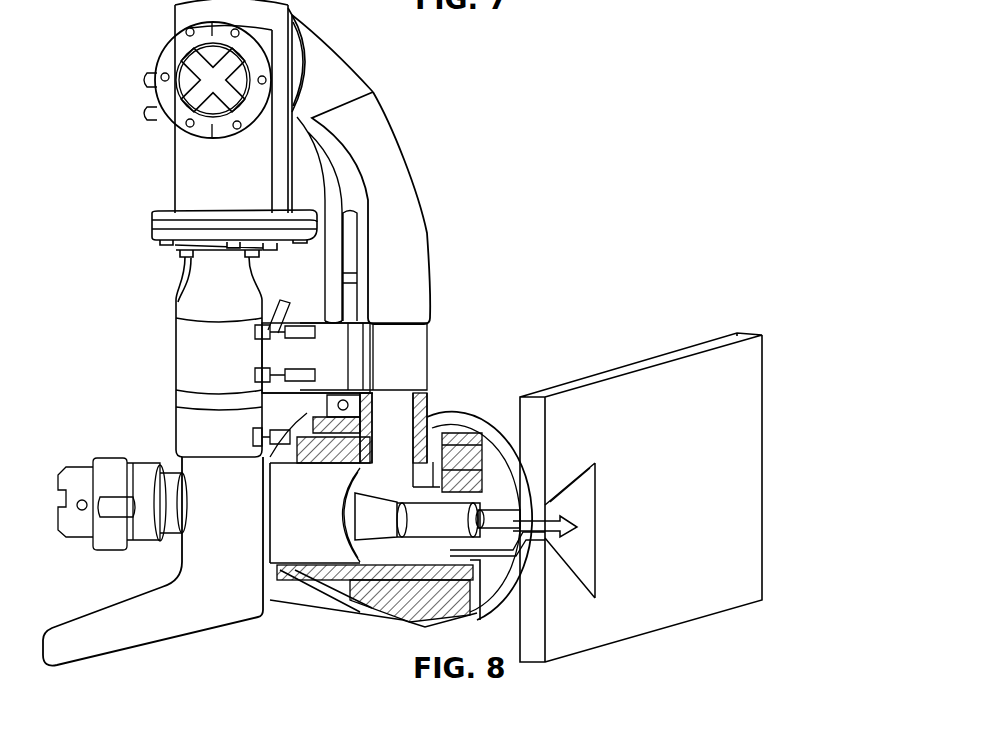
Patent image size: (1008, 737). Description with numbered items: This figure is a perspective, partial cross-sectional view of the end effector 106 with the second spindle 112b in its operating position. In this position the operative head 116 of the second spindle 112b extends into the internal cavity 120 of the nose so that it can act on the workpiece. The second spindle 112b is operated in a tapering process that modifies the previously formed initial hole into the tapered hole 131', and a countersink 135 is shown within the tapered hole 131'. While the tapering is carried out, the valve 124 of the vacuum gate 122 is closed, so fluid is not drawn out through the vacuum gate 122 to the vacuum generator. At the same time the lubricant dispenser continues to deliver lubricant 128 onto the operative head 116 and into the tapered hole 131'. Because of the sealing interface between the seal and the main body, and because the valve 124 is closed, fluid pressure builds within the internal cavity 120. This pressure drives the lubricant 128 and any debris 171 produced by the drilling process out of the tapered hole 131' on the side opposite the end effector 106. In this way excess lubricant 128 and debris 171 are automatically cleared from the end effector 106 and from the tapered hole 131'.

The end effector 106 is at (485, 372).
The second spindle 112b is at (405, 525).
The operative head 116 is at (492, 522).
The internal cavity 120 is at (420, 478).
The vacuum gate 122 is at (190, 31).
The valve 124 is at (192, 97).
The lubricant 128 is at (597, 500).
The tapered hole 131' is at (592, 594).
The countersink 135 is at (578, 500).
The debris 171 is at (597, 567).